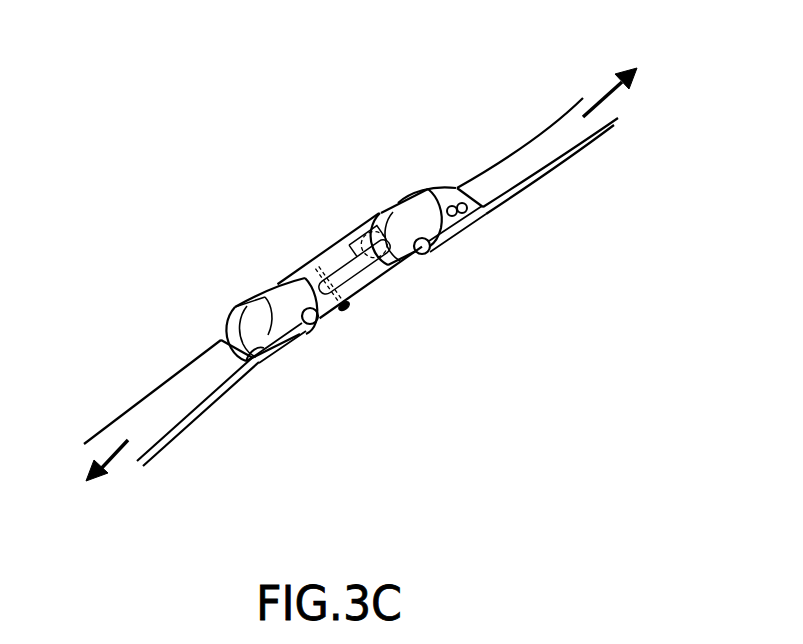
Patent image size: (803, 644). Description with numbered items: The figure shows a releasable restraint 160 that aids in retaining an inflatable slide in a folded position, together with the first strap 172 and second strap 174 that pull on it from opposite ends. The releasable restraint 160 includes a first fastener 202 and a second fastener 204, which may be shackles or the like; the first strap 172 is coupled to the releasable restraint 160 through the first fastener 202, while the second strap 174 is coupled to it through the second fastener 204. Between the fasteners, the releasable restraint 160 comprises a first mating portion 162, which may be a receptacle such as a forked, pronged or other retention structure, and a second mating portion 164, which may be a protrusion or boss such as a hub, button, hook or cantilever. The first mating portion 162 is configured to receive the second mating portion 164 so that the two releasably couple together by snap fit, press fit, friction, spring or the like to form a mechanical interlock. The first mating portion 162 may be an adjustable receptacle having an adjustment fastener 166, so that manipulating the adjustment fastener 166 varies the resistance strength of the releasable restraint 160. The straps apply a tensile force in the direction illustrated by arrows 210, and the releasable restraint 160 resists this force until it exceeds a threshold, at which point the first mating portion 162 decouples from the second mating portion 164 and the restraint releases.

The releasable restraint 160 is at (448, 426).
The first mating portion 162 is at (302, 273).
The second mating portion 164 is at (420, 261).
The adjustment fastener 166 is at (343, 312).
The first strap 172 is at (185, 390).
The second strap 174 is at (528, 160).
The first fastener 202 is at (246, 302).
The second fastener 204 is at (420, 189).
The arrows 210 is at (608, 88).